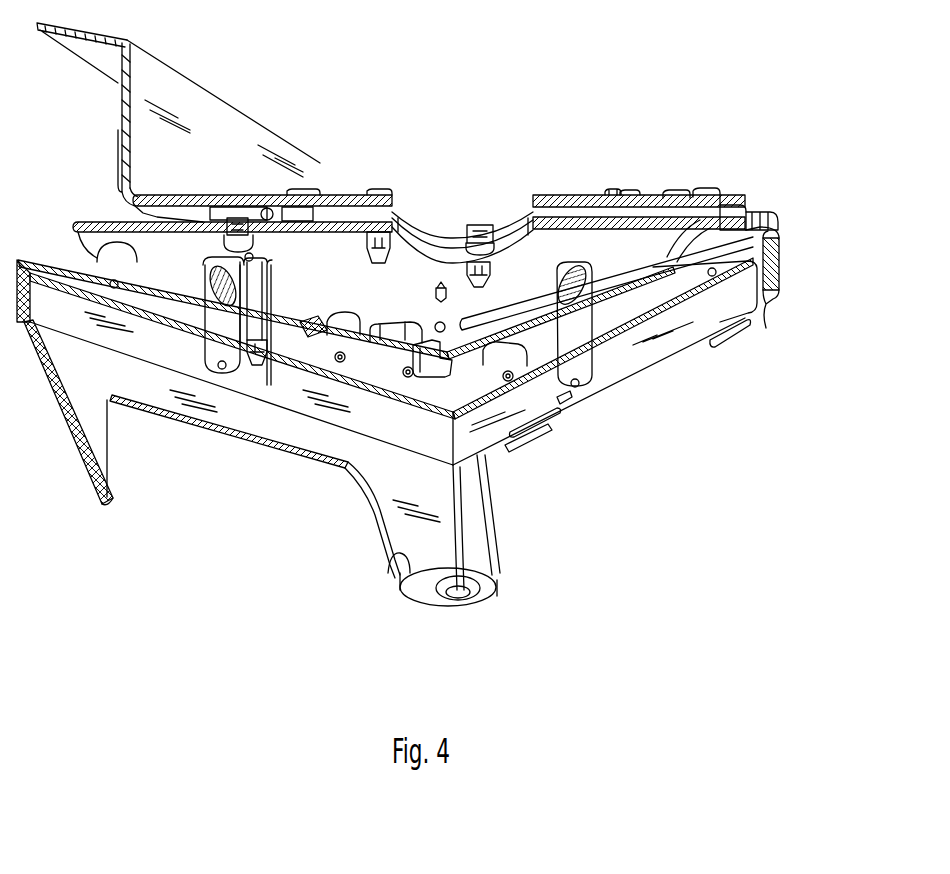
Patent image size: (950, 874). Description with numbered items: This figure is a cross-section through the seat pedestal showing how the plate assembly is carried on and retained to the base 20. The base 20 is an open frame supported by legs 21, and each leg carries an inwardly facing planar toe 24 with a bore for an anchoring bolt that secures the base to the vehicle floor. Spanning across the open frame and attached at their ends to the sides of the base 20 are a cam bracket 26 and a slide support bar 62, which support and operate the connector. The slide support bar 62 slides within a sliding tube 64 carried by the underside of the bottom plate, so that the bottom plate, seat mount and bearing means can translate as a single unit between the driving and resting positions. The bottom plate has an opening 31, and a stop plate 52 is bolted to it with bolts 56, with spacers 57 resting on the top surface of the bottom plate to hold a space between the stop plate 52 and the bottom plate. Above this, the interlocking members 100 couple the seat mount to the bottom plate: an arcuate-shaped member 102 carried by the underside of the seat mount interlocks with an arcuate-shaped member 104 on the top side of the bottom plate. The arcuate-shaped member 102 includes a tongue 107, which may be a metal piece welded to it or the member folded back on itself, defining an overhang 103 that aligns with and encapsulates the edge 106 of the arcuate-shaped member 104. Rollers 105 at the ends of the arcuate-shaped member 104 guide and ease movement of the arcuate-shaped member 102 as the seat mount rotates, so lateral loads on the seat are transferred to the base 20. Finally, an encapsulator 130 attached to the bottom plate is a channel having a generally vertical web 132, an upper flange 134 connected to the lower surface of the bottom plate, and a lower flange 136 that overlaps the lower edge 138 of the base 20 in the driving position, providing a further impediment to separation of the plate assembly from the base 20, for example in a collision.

The base 20 is at (416, 419).
The leg 21 is at (493, 512).
The planar toe 24 is at (390, 555).
The cam bracket 26 is at (272, 365).
The opening 31 is at (507, 222).
The stop plate 52 is at (608, 190).
The bolt 56 is at (470, 225).
The spacer 57 is at (445, 235).
The slide support bar 62 is at (588, 360).
The sliding tube 64 is at (213, 365).
The interlocking members 100 is at (447, 209).
The arcuate-shaped member 102 is at (672, 190).
The overhang 103 is at (743, 217).
The arcuate-shaped member 104 is at (693, 187).
The roller 105 is at (700, 250).
The edge 106 is at (205, 195).
The tongue 107 is at (740, 207).
The encapsulator 130 is at (798, 305).
The web 132 is at (781, 267).
The upper flange 134 is at (755, 228).
The lower flange 136 is at (764, 328).
The lower edge 138 is at (496, 450).